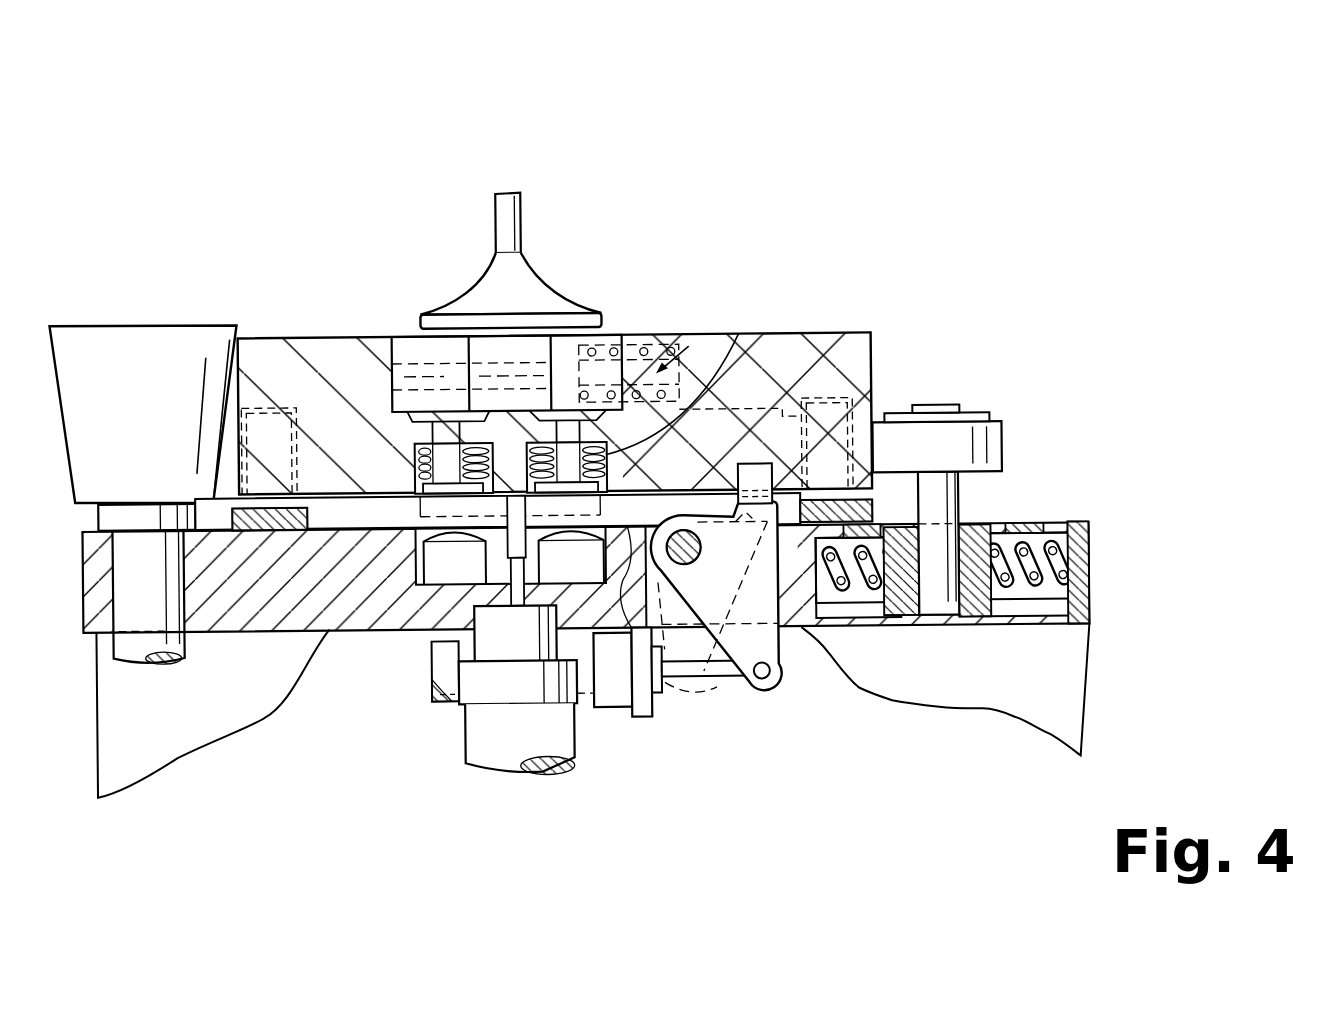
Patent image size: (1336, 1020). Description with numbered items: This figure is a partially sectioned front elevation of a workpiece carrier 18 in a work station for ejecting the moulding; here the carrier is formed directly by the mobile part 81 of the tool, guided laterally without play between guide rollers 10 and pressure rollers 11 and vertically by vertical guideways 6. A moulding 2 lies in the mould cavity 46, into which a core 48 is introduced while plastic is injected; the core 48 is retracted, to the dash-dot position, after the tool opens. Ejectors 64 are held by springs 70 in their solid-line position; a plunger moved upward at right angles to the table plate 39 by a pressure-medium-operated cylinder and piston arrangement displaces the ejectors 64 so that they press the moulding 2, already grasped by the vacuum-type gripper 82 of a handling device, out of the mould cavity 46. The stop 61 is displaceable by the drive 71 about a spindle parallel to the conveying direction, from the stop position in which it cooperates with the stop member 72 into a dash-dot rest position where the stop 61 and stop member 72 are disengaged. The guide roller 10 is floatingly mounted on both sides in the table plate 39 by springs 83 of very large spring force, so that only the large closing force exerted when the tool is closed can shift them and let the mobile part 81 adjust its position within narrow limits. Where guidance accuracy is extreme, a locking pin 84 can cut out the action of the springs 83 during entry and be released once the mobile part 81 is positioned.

The moulding 2 is at (410, 340).
The vertical guideway 6 is at (260, 520).
The guide roller 10 is at (965, 440).
The pressure roller 11 is at (190, 360).
The workpiece carrier 18 is at (579, 471).
The table plate 39 is at (353, 600).
The mould cavity 46 is at (385, 360).
The core 48 is at (690, 347).
The stop 61 is at (786, 665).
The ejector 64 is at (392, 400).
The spring 70 is at (755, 465).
The drive 71 is at (608, 693).
The stop member 72 is at (828, 400).
The mobile part of the tool 81 is at (297, 368).
The vacuum-type gripper 82 is at (528, 287).
The spring 83 is at (850, 612).
The locking pin 84 is at (910, 622).